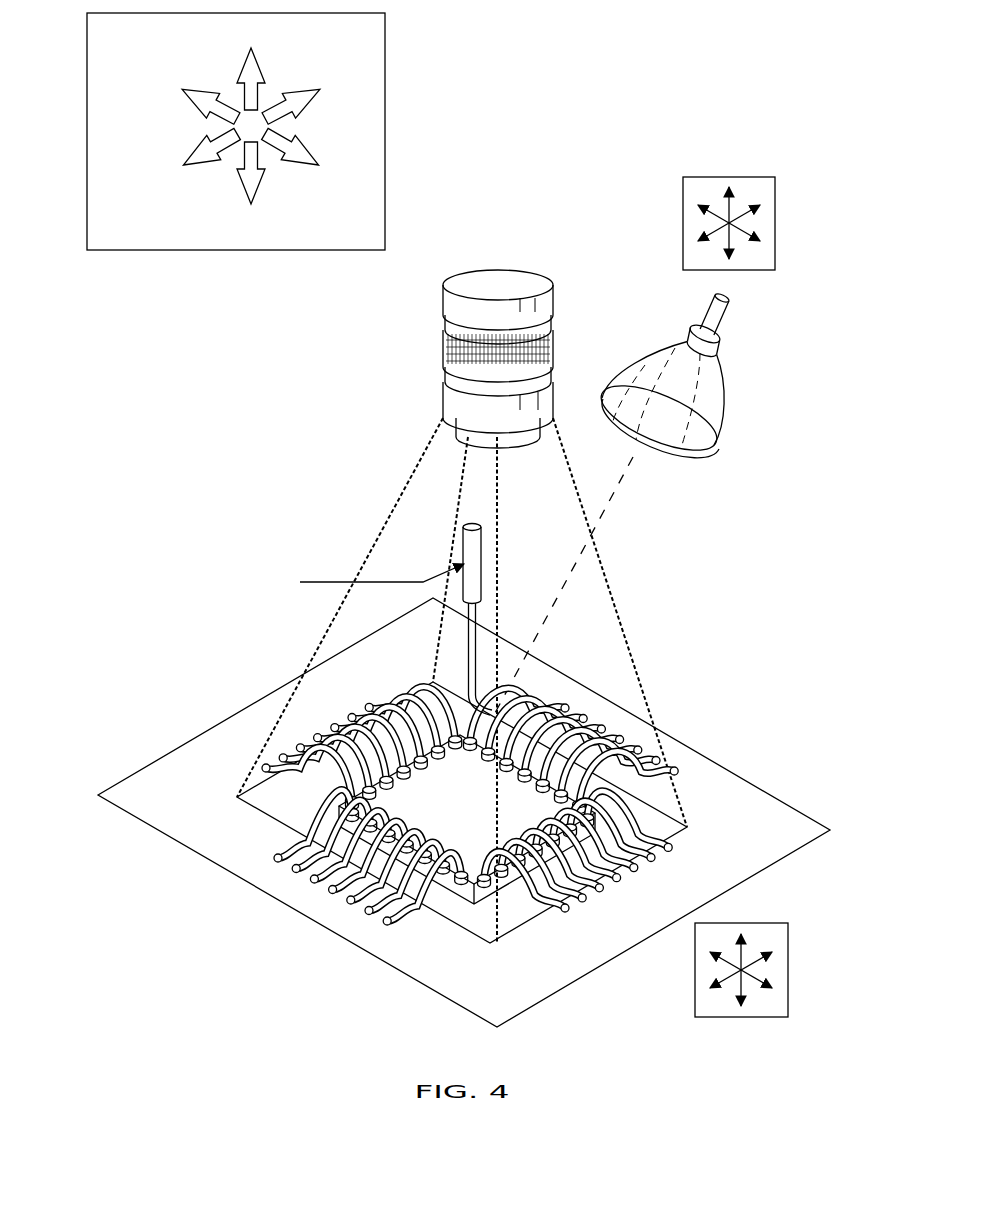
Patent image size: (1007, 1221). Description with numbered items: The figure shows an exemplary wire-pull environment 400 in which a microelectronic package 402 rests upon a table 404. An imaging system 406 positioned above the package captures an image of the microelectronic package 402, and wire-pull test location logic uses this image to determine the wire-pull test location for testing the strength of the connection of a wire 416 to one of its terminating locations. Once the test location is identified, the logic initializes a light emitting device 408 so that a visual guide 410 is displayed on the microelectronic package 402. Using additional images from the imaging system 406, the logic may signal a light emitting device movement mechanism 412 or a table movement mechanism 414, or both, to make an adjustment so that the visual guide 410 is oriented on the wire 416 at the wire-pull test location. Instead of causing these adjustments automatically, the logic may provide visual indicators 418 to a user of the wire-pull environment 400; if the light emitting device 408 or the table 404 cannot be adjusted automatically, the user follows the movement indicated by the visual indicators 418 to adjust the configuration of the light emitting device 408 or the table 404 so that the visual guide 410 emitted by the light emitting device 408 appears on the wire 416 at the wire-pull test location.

The wire-pull environment 400 is at (612, 58).
The microelectronic package 402 is at (402, 799).
The table 404 is at (722, 764).
The imaging system 406 is at (443, 346).
The light emitting device 408 is at (725, 397).
The visual guide 410 is at (623, 490).
The light emitting device movement mechanism 412 is at (738, 177).
The table movement mechanism 414 is at (752, 1017).
The wire 416 is at (470, 775).
The visual indicators 418 is at (233, 250).